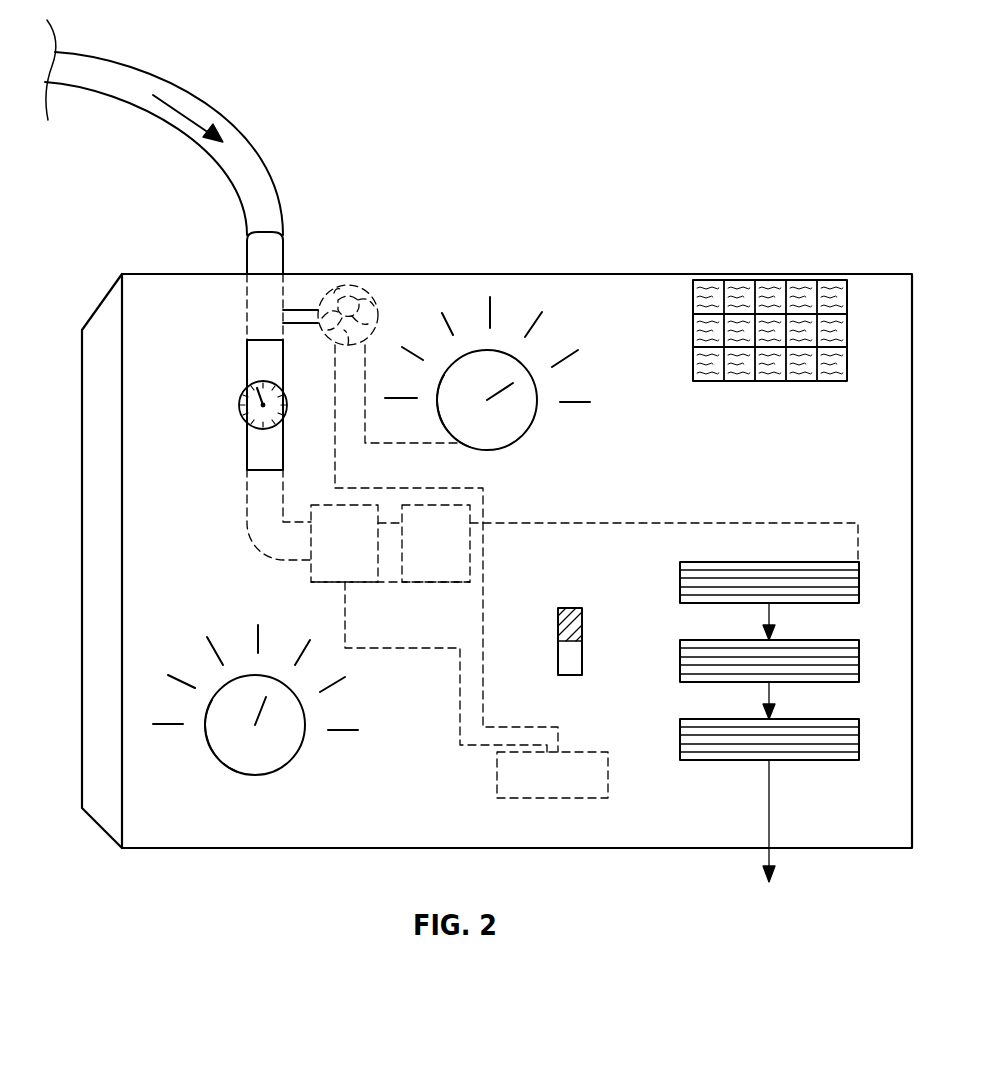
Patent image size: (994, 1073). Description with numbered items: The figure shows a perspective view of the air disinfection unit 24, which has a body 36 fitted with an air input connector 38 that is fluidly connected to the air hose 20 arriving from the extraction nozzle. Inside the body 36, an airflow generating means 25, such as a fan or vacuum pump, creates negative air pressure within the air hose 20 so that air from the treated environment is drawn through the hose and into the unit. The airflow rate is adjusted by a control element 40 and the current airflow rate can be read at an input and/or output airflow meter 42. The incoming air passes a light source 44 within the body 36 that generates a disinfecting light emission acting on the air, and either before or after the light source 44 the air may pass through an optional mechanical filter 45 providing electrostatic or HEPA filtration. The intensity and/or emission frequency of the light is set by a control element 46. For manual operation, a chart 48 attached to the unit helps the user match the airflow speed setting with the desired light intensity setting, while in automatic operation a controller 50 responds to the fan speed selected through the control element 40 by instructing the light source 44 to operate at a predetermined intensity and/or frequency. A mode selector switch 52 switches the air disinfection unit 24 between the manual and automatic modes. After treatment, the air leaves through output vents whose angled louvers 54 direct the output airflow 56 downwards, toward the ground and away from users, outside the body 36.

The air hose 20 is at (106, 78).
The air disinfection unit 24 is at (527, 240).
The airflow generating means 25 is at (380, 317).
The body 36 is at (81, 385).
The air input connector 38 is at (284, 260).
The control element 40 is at (503, 433).
The input and/or output airflow meter 42 is at (240, 400).
The light source 44 is at (318, 584).
The mechanical filter 45 is at (410, 584).
The control element 46 is at (275, 760).
The chart 48 is at (772, 276).
The controller 50 is at (497, 768).
The mode selector switch 52 is at (583, 650).
The louvers 54 is at (860, 582).
The output airflow 56 is at (194, 110).